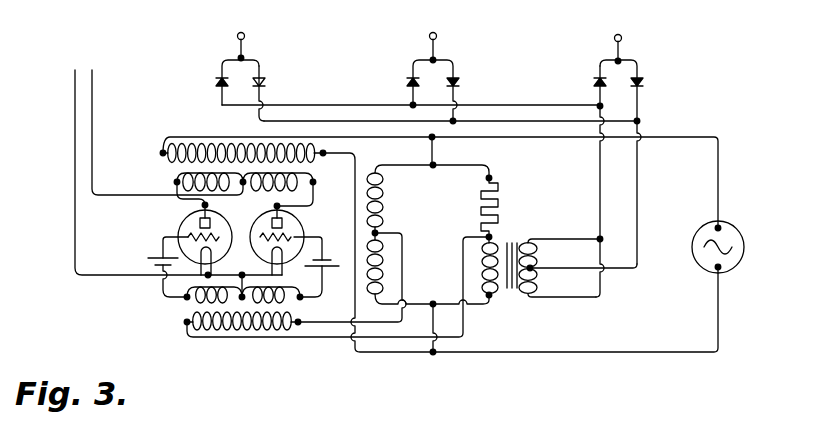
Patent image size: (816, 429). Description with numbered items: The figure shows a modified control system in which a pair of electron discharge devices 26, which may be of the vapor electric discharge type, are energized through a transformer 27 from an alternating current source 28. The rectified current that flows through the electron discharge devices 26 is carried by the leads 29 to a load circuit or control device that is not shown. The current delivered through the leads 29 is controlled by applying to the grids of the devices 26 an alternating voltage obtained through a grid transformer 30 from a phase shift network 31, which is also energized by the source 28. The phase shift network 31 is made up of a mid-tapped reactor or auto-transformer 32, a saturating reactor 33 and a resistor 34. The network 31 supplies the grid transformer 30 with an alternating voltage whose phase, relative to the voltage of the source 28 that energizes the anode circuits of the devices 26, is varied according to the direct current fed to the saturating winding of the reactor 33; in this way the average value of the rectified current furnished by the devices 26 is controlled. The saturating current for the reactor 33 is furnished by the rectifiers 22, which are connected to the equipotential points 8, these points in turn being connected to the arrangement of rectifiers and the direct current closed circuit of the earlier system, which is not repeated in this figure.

The equipotential points 8 is at (246, 34).
The rectifiers 22 is at (446, 178).
The electron discharge devices 26 is at (178, 221).
The transformer 27 is at (210, 146).
The alternating current source 28 is at (734, 228).
The leads 29 is at (156, 120).
The grid transformer 30 is at (195, 307).
The phase shift network 31 is at (449, 196).
The mid-tapped reactor or auto-transformer 32 is at (378, 231).
The saturating reactor 33 is at (517, 289).
The resistor 34 is at (502, 203).